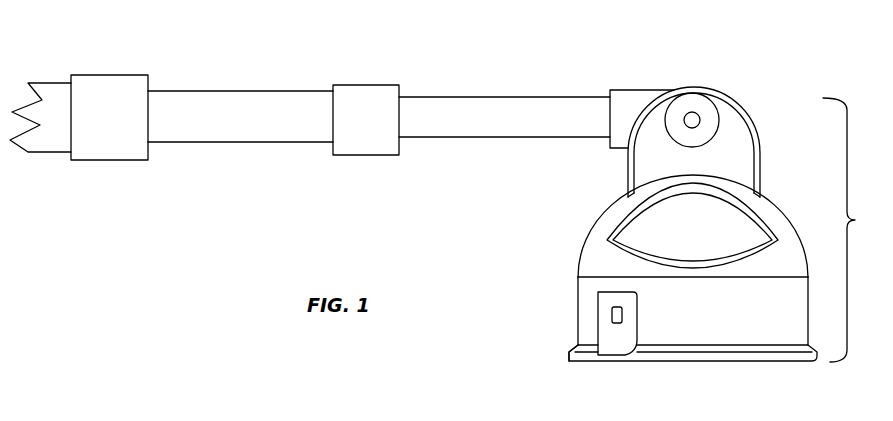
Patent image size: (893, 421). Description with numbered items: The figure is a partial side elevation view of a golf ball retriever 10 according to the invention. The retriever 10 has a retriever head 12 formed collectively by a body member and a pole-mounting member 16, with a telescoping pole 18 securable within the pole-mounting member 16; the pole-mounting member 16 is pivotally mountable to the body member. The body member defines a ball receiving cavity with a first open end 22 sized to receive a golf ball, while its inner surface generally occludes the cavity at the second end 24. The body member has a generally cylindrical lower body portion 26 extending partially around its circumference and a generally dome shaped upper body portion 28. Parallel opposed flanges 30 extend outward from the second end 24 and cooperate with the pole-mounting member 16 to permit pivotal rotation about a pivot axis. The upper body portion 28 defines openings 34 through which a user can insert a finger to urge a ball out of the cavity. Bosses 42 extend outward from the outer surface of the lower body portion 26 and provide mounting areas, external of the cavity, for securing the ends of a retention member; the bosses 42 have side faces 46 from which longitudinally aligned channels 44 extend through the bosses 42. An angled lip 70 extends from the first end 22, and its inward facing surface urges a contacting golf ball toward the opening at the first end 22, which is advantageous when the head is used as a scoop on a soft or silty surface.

The golf ball retriever 10 is at (512, 70).
The retriever head 12 is at (856, 230).
The pole-mounting member 16 is at (627, 98).
The telescoping pole 18 is at (270, 127).
The first open end 22 is at (603, 362).
The second end 24 is at (620, 203).
The lower body portion 26 is at (723, 318).
The upper body portion 28 is at (600, 260).
The flanges 30 is at (739, 130).
The openings 34 is at (650, 228).
The bosses 42 is at (628, 323).
The channels 44 is at (613, 307).
The side faces 46 is at (620, 342).
The angled lip 70 is at (567, 357).